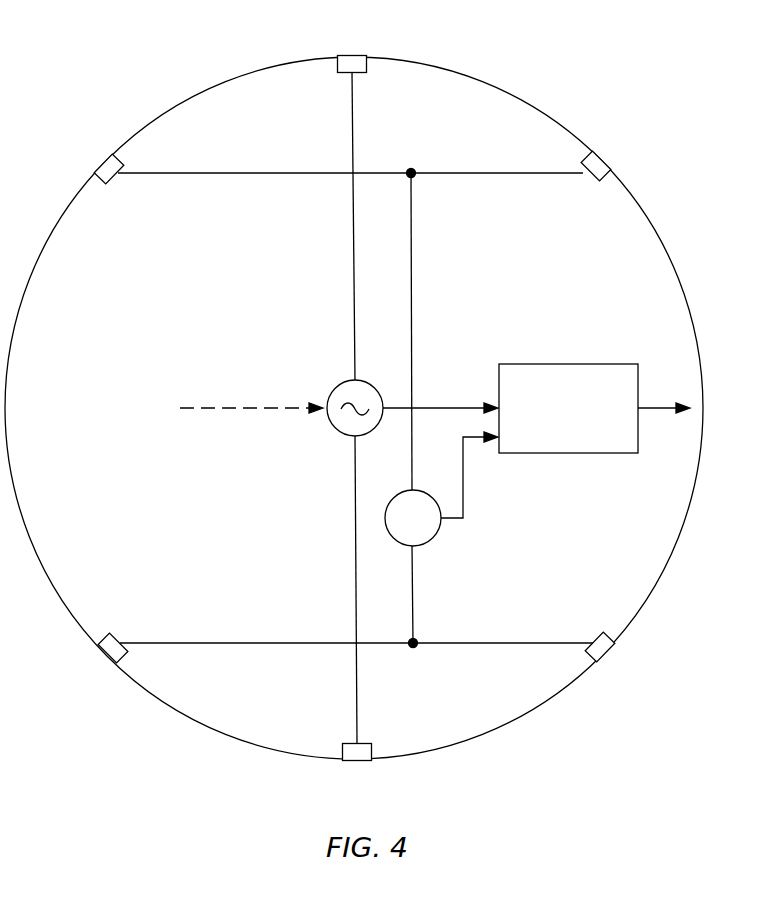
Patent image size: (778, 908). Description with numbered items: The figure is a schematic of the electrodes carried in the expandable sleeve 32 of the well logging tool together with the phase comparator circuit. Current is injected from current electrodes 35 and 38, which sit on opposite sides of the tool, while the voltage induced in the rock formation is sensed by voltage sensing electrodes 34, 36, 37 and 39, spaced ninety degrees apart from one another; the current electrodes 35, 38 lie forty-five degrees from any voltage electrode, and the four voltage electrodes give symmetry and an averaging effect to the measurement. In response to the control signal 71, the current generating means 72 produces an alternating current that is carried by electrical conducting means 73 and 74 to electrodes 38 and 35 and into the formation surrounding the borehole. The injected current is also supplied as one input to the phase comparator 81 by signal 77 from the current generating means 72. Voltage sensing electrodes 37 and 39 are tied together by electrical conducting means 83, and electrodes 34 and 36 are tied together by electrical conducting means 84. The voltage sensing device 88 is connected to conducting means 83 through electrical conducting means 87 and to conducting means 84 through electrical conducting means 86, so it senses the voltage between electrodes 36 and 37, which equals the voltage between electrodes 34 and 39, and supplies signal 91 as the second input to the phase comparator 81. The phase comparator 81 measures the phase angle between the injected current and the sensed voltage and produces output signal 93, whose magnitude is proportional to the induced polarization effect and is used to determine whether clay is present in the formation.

The expandable sleeve 32 is at (217, 84).
The voltage sensing electrode 34 is at (110, 662).
The current electrode 35 is at (357, 762).
The voltage sensing electrode 36 is at (608, 658).
The voltage sensing electrode 37 is at (594, 158).
The current electrode 38 is at (348, 56).
The voltage sensing electrode 39 is at (106, 158).
The control signal 71 is at (214, 412).
The current generating means 72 is at (330, 429).
The electrical conducting means 73 is at (352, 277).
The electrical conducting means 74 is at (356, 557).
The signal 77 is at (439, 408).
The phase comparator 81 is at (560, 364).
The electrical conducting means 83 is at (228, 175).
The electrical conducting means 84 is at (228, 641).
The electrical conducting means 86 is at (413, 598).
The electrical conducting means 87 is at (412, 255).
The voltage sensing device 88 is at (440, 534).
The signal 91 is at (463, 497).
The output signal 93 is at (656, 407).